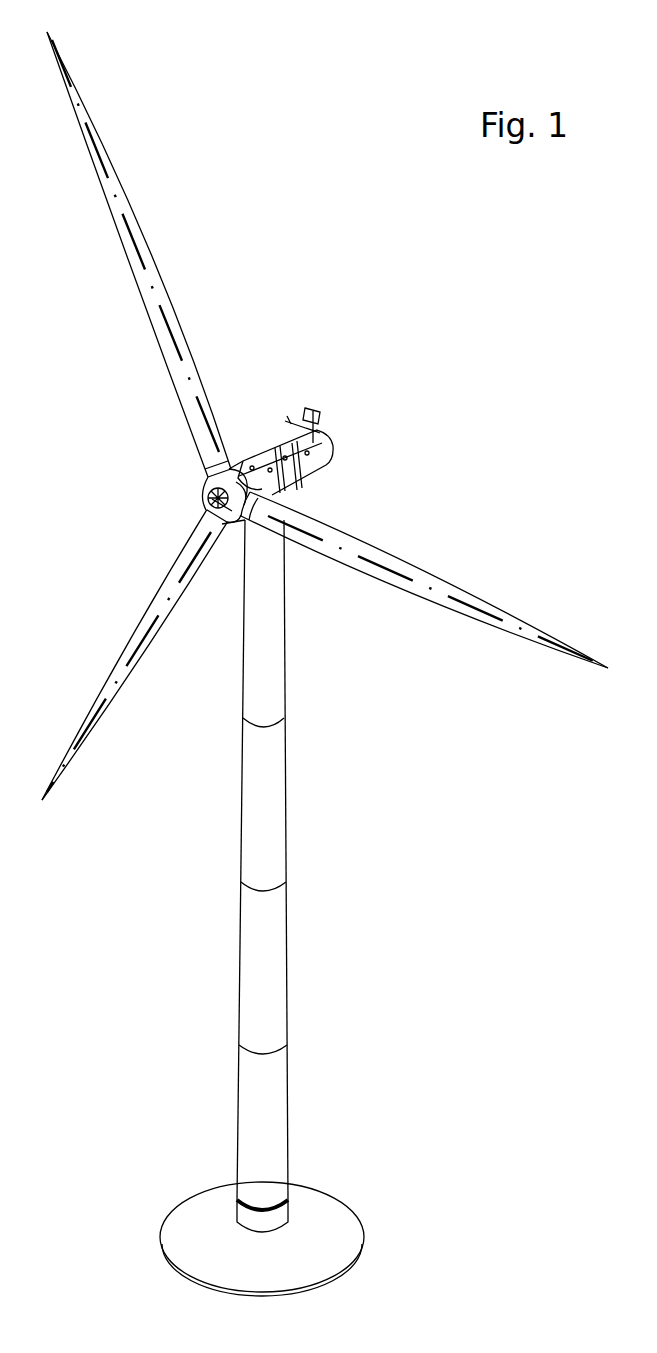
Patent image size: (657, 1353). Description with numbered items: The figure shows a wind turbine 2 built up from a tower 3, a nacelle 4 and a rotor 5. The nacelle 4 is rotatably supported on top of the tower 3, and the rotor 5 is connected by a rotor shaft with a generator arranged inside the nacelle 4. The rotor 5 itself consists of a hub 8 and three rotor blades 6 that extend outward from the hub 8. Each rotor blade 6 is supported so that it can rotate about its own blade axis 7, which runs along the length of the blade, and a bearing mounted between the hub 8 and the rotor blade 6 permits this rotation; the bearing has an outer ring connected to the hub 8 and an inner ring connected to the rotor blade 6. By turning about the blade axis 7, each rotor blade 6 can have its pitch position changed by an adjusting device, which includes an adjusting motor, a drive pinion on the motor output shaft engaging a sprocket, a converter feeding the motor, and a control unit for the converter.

The wind turbine 2 is at (570, 330).
The tower 3 is at (275, 982).
The nacelle 4 is at (365, 483).
The rotor 5 is at (183, 501).
The rotor blade 6 is at (490, 556).
The blade axis 7 is at (190, 222).
The hub 8 is at (230, 523).